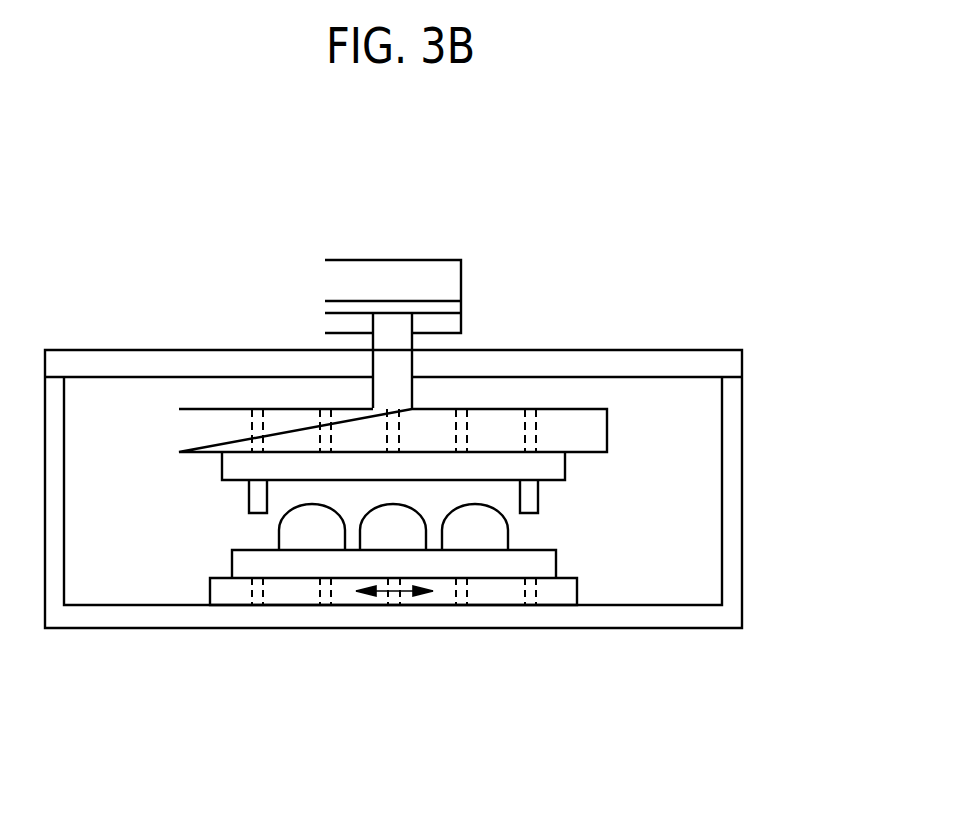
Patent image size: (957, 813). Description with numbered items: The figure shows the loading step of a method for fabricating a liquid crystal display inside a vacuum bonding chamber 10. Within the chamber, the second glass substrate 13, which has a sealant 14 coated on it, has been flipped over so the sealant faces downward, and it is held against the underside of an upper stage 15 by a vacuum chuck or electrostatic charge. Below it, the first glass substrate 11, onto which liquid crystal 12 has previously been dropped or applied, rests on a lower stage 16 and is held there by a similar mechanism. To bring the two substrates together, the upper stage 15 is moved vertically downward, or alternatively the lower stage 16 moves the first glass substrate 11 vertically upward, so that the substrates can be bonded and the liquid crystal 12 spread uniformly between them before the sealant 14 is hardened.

The vacuum bonding chamber 10 is at (732, 477).
The first glass substrate 11 is at (550, 563).
The liquid crystal 12 is at (298, 535).
The second glass substrate 13 is at (555, 464).
The sealant 14 is at (253, 495).
The upper stage 15 is at (576, 423).
The lower stage 16 is at (555, 593).